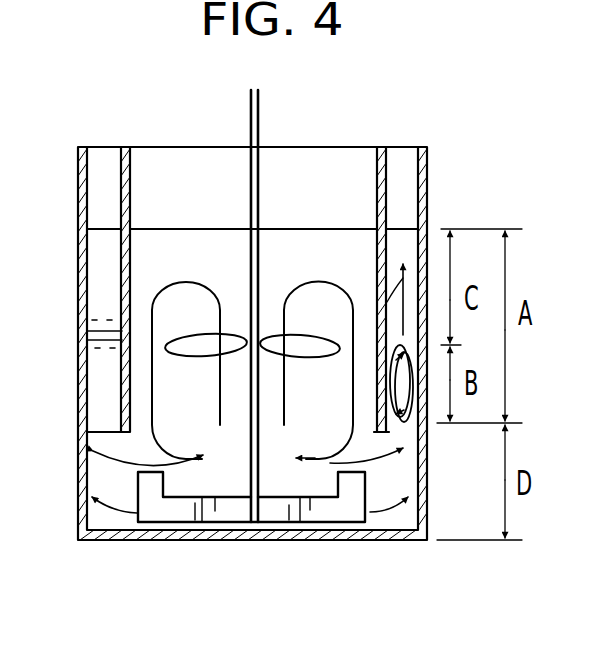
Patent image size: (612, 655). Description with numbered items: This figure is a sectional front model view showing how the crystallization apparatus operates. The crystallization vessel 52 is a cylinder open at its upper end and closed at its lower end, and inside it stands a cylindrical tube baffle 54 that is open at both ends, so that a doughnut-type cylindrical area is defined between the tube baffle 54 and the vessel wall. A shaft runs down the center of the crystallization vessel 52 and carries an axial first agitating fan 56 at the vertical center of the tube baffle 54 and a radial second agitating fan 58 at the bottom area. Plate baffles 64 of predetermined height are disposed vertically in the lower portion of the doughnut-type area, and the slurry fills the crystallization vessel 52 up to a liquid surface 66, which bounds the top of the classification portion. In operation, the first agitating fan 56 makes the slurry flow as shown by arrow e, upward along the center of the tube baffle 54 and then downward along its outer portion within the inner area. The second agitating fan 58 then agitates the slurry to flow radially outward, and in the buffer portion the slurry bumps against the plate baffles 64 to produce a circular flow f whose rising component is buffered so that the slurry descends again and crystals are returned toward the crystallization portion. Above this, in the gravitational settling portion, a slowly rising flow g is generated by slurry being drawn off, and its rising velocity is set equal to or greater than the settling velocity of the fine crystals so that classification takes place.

The crystallization vessel 52 is at (428, 218).
The tube baffle 54 is at (386, 191).
The first agitating fan 56 is at (304, 343).
The second agitating fan 58 is at (270, 508).
The plate baffles 64 is at (102, 396).
The liquid surface 66 is at (290, 228).
The arrow e (slurry circulation flow) e is at (185, 282).
The circular flow f is at (413, 400).
The rising flow g is at (380, 275).